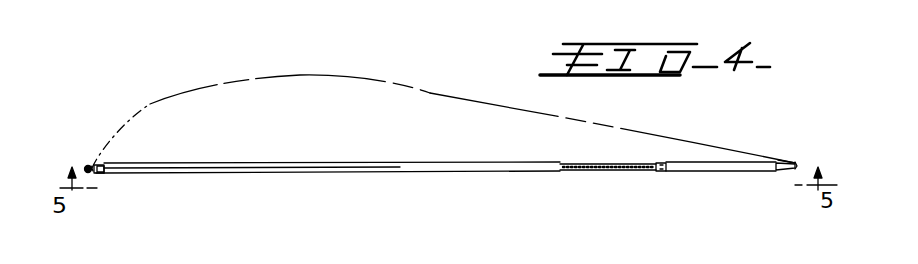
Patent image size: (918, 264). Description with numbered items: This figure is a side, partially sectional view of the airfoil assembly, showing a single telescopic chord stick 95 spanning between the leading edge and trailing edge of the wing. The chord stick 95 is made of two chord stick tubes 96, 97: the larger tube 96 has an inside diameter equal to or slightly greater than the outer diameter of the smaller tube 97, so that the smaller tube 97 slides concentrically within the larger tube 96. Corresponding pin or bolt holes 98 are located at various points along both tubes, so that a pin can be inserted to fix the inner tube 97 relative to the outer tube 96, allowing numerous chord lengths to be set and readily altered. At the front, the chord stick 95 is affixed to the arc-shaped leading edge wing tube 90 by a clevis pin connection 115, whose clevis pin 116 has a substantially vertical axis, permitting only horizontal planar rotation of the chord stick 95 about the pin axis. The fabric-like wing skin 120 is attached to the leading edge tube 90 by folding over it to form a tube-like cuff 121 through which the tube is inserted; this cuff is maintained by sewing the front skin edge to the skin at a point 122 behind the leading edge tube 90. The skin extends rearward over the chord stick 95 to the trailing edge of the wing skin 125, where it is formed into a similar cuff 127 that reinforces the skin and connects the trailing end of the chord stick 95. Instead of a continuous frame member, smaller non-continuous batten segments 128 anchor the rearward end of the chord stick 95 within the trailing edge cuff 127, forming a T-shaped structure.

The wing skin material 120 is at (338, 74).
The chord stick 95 is at (457, 181).
The larger chord stick tube 96 is at (284, 163).
The smaller chord stick tube 97 is at (697, 172).
The pin or bolt holes 98 is at (580, 170).
The trailing edge of the wing skin 125 is at (790, 181).
The leading edge wing tube 90 is at (88, 167).
The tube-like cuff 121 is at (93, 164).
The skin attachment point 122 is at (96, 166).
The clevis pin 116 is at (98, 166).
The clevis pin connection 115 is at (106, 181).
The trailing edge cuff 127 is at (793, 162).
The batten segments 128 is at (797, 164).